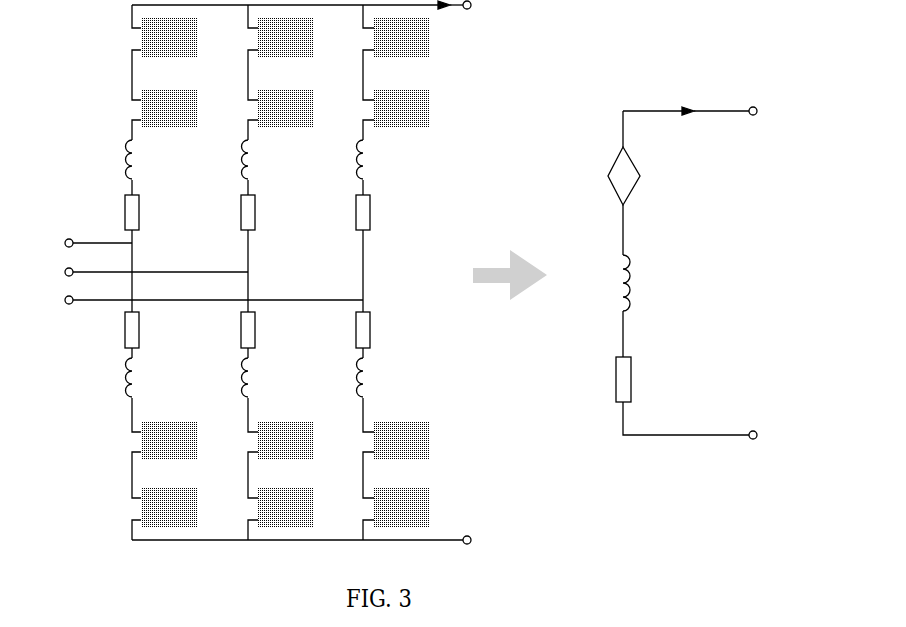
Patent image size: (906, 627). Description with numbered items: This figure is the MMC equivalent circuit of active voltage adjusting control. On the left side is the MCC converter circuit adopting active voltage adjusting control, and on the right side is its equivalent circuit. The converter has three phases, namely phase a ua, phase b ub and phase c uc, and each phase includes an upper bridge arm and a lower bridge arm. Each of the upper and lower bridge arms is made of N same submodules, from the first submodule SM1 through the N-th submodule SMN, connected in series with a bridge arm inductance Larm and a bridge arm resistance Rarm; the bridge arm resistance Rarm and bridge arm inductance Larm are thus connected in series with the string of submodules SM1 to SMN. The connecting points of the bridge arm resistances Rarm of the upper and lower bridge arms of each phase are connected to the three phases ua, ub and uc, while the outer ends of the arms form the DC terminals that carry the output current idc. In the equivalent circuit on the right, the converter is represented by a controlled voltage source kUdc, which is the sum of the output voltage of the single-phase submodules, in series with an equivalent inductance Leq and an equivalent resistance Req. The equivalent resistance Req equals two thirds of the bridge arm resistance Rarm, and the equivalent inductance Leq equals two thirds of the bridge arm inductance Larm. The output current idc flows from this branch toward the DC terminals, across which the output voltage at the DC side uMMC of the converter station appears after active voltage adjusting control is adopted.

The first submodule SM1 is at (285, 239).
The N-th submodule SMN is at (285, 309).
The bridge arm inductance Larm is at (245, 271).
The bridge arm resistance Rarm is at (247, 274).
The phase a ua is at (83, 244).
The phase b ub is at (141, 273).
The phase c uc is at (199, 301).
The output current idc is at (690, 95).
The controlled voltage source kUdc is at (600, 180).
The equivalent inductance Leq is at (604, 283).
The equivalent resistance Req is at (604, 379).
The output voltage at the DC side uMMC is at (755, 278).